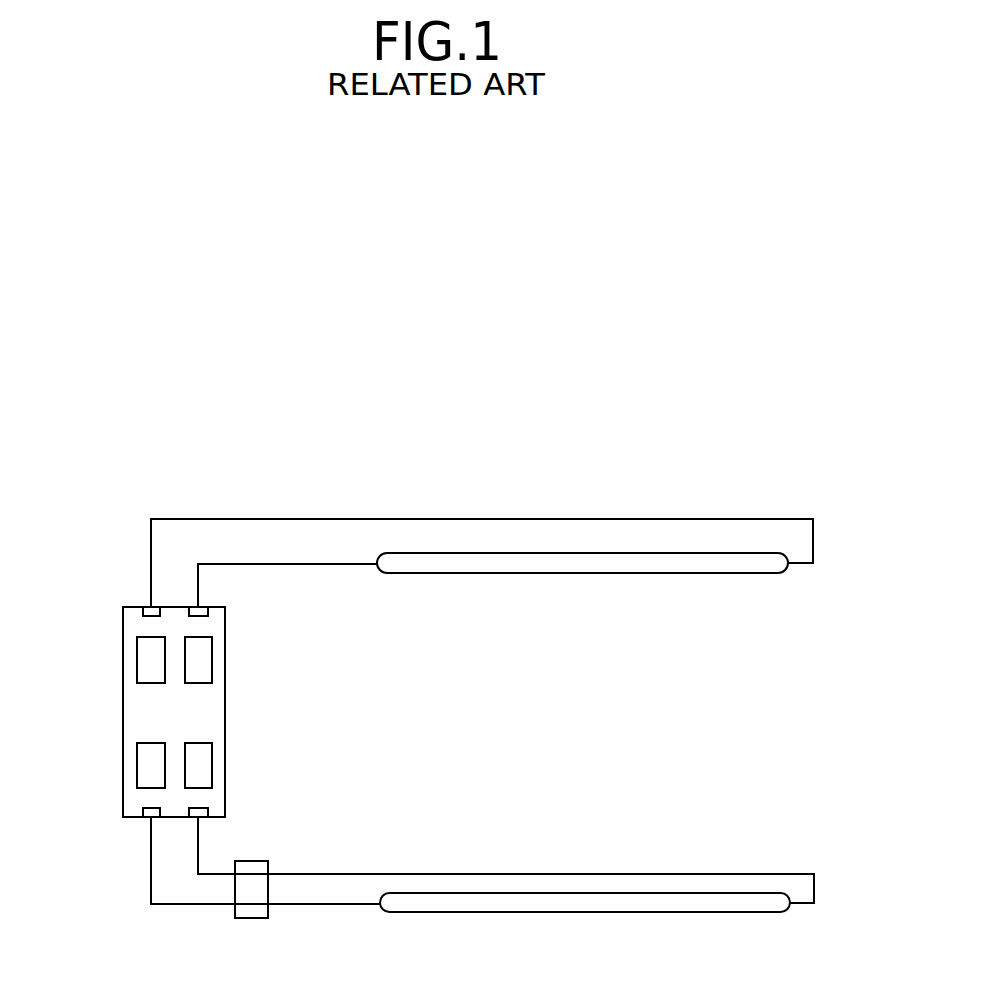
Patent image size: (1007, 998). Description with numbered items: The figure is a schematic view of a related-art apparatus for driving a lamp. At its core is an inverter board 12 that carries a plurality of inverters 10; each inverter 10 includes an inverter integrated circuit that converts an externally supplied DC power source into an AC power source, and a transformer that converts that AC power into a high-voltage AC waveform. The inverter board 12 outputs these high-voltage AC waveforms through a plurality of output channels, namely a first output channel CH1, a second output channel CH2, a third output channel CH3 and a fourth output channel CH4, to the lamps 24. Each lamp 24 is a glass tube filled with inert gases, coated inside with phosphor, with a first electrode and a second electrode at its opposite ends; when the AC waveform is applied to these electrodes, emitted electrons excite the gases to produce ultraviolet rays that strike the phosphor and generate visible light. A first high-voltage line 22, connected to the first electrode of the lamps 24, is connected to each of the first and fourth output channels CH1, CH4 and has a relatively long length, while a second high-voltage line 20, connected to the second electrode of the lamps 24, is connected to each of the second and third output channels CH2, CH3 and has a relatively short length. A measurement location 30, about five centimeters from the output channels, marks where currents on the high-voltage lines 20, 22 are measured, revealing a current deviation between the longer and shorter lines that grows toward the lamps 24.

The inverter 10 is at (208, 658).
The inverter board 12 is at (225, 713).
The second high-voltage line 20 is at (333, 904).
The first high-voltage line 22 is at (814, 885).
The lamp 24 is at (745, 912).
The measurement location 30 is at (253, 918).
The first output channel CH1 is at (150, 616).
The second output channel CH2 is at (208, 614).
The third output channel CH3 is at (148, 818).
The fourth output channel CH4 is at (208, 815).